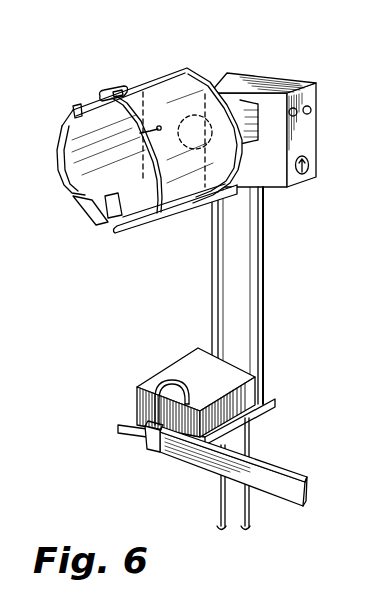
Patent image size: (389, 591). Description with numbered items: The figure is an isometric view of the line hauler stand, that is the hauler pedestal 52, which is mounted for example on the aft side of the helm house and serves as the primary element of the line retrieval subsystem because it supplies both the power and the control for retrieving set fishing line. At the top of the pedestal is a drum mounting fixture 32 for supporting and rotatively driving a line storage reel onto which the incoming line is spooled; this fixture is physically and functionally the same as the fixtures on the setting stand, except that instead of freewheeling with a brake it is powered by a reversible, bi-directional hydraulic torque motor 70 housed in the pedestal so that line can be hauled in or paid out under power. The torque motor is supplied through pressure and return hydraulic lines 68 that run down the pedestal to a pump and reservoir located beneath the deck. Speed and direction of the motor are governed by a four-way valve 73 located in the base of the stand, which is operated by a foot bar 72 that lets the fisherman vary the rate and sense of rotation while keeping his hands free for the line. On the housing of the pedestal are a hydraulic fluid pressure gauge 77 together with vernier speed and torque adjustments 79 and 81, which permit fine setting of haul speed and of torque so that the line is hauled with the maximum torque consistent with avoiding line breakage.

The hauler pedestal 52 is at (101, 74).
The drum mounting fixture 32 is at (56, 170).
The reversible hydraulic torque motor 70 is at (236, 102).
The vernier speed adjustment 79 is at (296, 106).
The vernier torque adjustment 81 is at (313, 109).
The hydraulic fluid pressure gauge 77 is at (311, 161).
The four-way valve 73 is at (190, 380).
The foot bar 72 is at (292, 472).
The hydraulic lines 68 is at (245, 500).